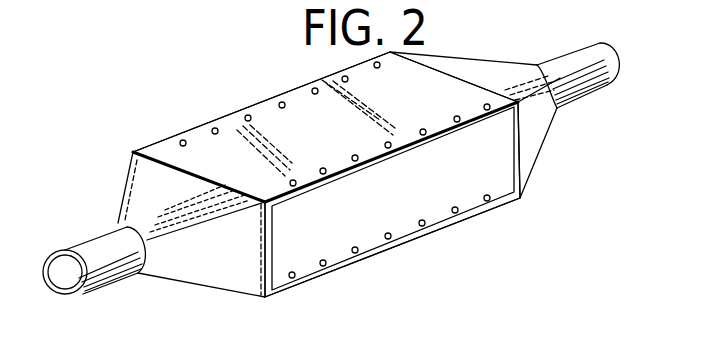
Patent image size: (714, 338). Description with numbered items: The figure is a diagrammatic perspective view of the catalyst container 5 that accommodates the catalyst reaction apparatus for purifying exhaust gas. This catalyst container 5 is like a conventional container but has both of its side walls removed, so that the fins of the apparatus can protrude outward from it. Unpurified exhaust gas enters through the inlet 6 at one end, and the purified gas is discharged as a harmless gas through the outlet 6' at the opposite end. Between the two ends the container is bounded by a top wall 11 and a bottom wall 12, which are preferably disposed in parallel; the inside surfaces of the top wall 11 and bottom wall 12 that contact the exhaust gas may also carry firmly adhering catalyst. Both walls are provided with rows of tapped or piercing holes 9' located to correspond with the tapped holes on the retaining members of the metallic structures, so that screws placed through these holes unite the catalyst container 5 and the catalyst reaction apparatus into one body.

The catalyst container 5 is at (262, 100).
The inlet 6 is at (94, 242).
The outlet 6' is at (580, 92).
The tapped holes or piercing holes 9' is at (191, 197).
The top wall 11 is at (235, 140).
The bottom wall 12 is at (427, 205).